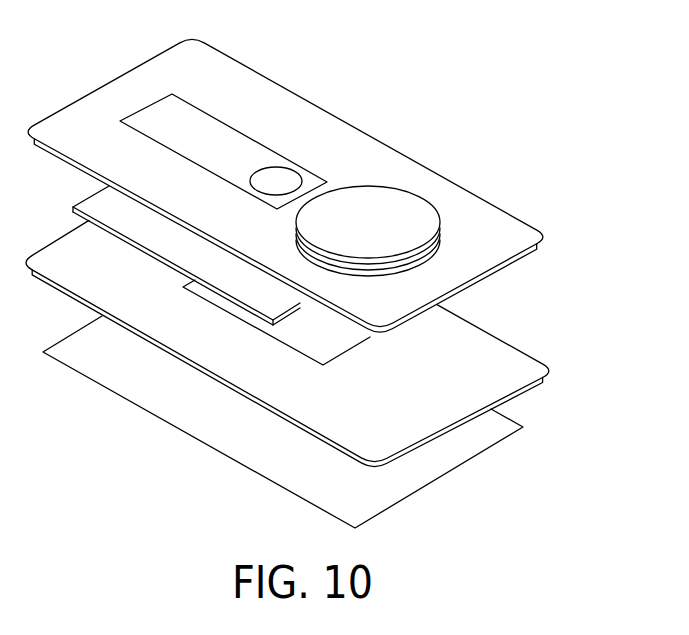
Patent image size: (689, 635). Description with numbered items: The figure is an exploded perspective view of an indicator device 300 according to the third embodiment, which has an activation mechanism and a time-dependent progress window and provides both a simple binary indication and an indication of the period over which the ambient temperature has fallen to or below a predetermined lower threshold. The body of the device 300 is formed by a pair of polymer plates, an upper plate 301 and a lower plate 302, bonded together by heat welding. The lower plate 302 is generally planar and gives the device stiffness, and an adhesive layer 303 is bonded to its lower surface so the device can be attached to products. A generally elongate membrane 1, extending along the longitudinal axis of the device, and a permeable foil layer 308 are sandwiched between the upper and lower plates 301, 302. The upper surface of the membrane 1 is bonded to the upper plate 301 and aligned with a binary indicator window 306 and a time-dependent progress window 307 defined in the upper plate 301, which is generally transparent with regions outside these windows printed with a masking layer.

The indicator device 300 is at (492, 115).
The upper plate 301 is at (498, 230).
The lower plate 302 is at (510, 347).
The adhesive layer 303 is at (467, 454).
The binary indicator window 306 is at (290, 180).
The time-dependent progress window 307 is at (158, 118).
The permeable foil layer 308 is at (337, 348).
The membrane 1 is at (100, 207).